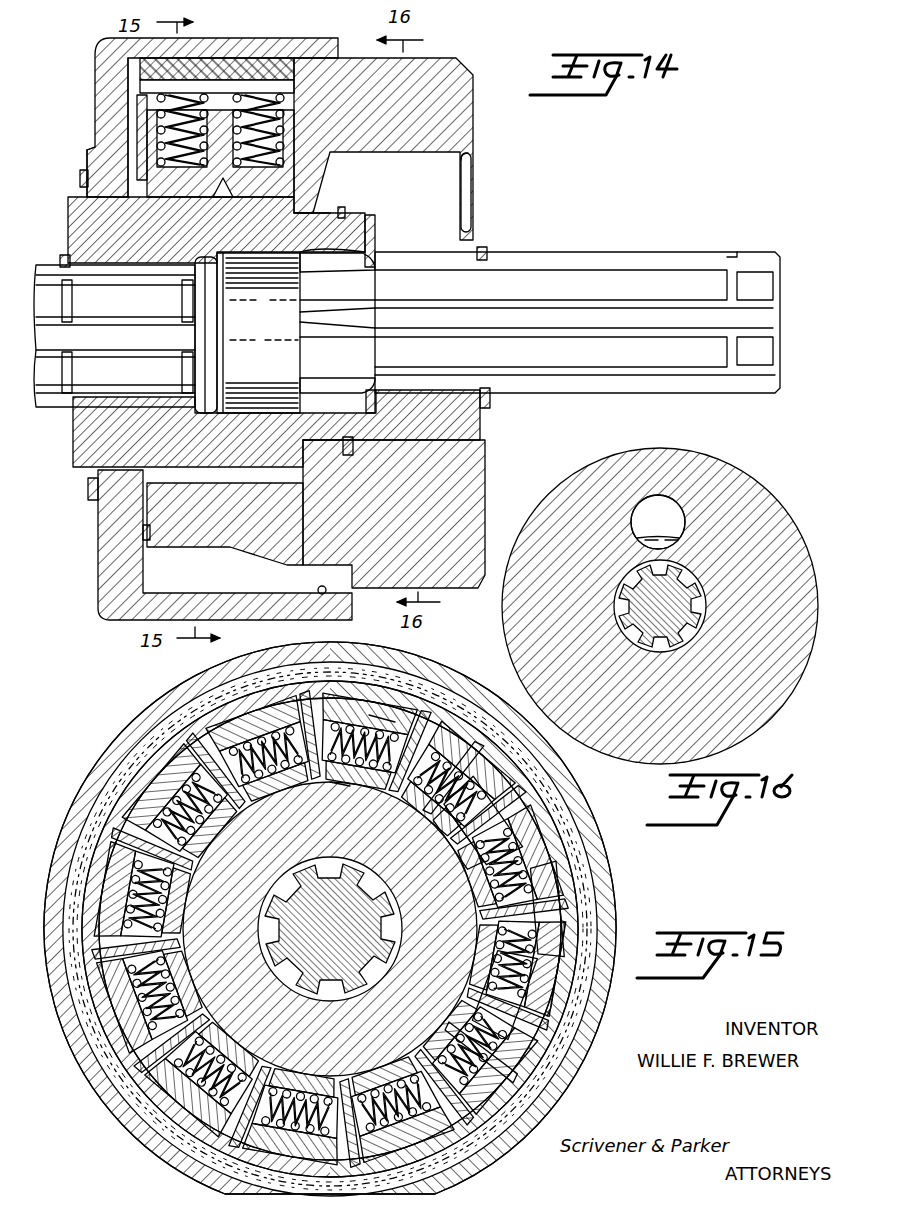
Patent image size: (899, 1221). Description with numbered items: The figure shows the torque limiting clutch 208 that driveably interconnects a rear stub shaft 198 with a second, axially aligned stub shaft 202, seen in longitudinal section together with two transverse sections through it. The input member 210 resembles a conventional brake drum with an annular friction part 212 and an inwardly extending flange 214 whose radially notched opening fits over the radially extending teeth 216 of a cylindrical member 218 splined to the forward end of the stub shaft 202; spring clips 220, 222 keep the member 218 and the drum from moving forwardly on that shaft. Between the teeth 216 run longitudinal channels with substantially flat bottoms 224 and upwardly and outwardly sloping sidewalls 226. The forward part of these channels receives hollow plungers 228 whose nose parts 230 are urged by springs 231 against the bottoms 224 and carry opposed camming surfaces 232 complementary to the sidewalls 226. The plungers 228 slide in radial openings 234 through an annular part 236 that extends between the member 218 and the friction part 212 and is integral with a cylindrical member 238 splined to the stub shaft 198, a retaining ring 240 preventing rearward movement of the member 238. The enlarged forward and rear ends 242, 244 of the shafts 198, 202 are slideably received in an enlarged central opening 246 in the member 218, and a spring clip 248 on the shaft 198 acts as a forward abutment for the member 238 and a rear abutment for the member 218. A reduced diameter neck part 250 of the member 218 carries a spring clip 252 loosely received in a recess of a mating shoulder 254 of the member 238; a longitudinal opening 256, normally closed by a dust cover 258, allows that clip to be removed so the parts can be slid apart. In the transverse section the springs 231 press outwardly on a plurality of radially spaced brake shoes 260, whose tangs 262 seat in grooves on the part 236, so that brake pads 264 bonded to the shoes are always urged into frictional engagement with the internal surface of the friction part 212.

In FIG. 14, the stub shaft 198 is at (572, 257).
In FIG. 16, the stub shaft 198 is at (700, 604).
In FIG. 14, the second stub shaft 202 is at (47, 402).
In FIG. 15, the second stub shaft 202 is at (385, 960).
In FIG. 14, the torque limiting clutch 208 is at (97, 85).
In FIG. 15, the torque limiting clutch 208 is at (605, 878).
In FIG. 14, the input member 210 is at (96, 148).
In FIG. 14, the annular friction part 212 is at (282, 40).
In FIG. 15, the annular friction part 212 is at (592, 843).
In FIG. 14, the inwardly extending flange 214 is at (90, 158).
In FIG. 14, the radially extending teeth 216 is at (80, 190).
In FIG. 15, the radially extending teeth 216 is at (410, 805).
In FIG. 14, the cylindrical member 218 is at (84, 444).
In FIG. 15, the cylindrical member 218 is at (215, 1008).
In FIG. 14, the spring clip 220 is at (65, 257).
In FIG. 14, the spring clip 222 is at (92, 494).
In FIG. 15, the flat bottoms 224 is at (370, 800).
In FIG. 15, the sloping sidewalls 226 is at (446, 873).
In FIG. 15, the hollow plungers 228 is at (398, 790).
In FIG. 15, the nose parts 230 is at (348, 800).
In FIG. 15, the springs 231 is at (588, 990).
In FIG. 15, the camming surfaces 232 is at (430, 836).
In FIG. 15, the radial openings 234 is at (405, 800).
In FIG. 14, the annular part 236 is at (143, 532).
In FIG. 15, the annular part 236 is at (570, 814).
In FIG. 14, the cylindrical member 238 is at (486, 582).
In FIG. 16, the cylindrical member 238 is at (757, 488).
In FIG. 14, the retaining ring 240 is at (492, 402).
In FIG. 14, the forward end 242 is at (296, 343).
In FIG. 14, the rear end 244 is at (215, 375).
In FIG. 14, the central opening 246 is at (330, 256).
In FIG. 14, the spring clip 248 is at (357, 275).
In FIG. 14, the reduced diameter neck part 250 is at (366, 215).
In FIG. 16, the reduced diameter neck part 250 is at (676, 543).
In FIG. 14, the spring clip 252 is at (342, 207).
In FIG. 14, the mating shoulder 254 is at (322, 450).
In FIG. 14, the longitudinal opening 256 is at (466, 168).
In FIG. 16, the longitudinal opening 256 is at (652, 497).
In FIG. 14, the dust cover 258 is at (463, 198).
In FIG. 15, the brake shoes 260 is at (565, 1005).
In FIG. 15, the tangs 262 is at (560, 922).
In FIG. 15, the brake pads 264 is at (578, 1040).